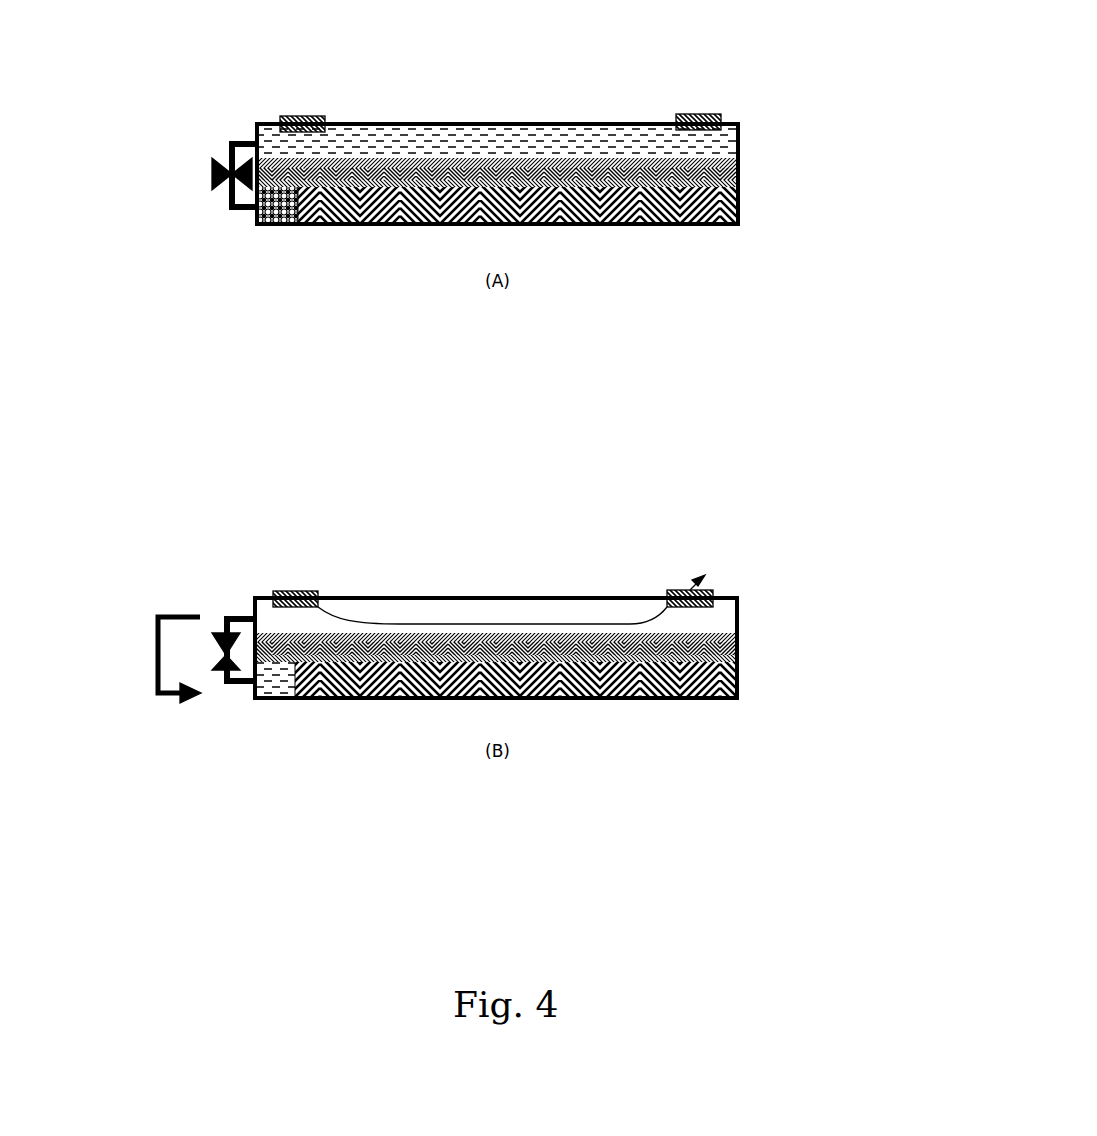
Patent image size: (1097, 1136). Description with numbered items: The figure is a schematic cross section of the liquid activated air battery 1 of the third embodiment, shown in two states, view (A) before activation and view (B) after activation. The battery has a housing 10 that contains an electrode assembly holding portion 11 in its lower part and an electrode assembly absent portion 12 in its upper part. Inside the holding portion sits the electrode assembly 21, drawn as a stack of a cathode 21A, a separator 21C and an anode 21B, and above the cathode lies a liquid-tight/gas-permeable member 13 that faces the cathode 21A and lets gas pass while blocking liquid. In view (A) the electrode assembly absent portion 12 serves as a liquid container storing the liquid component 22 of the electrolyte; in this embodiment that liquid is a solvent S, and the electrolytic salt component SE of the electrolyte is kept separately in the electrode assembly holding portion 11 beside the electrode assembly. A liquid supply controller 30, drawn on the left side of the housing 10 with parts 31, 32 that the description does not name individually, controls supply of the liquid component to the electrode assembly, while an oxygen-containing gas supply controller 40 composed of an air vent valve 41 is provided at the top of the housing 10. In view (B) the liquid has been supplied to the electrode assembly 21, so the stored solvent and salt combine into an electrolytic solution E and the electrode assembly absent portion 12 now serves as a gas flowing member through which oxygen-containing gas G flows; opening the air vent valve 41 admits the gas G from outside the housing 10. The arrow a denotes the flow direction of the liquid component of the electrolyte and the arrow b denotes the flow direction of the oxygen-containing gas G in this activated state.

The liquid activated air battery 1 is at (506, 108).
The housing 10 is at (740, 142).
The electrode assembly holding portion 11 is at (630, 225).
The electrode assembly absent portion 12 is at (556, 345).
The liquid-tight/gas-permeable member 13 is at (740, 162).
The electrode assembly 21 is at (573, 442).
The cathode 21A is at (740, 170).
The anode 21B is at (740, 205).
The separator 21C is at (740, 182).
The liquid component of the electrolyte 22 is at (455, 398).
The solvent S is at (567, 140).
The electrolytic solution E is at (262, 699).
The liquid supply controller 30 is at (178, 407).
The supply pipe 31 is at (233, 144).
The valve 32 is at (213, 173).
The oxygen-containing gas supply controller 40 is at (526, 319).
The air vent valve 41 is at (300, 116).
The electrolytic salt component SE is at (257, 217).
The oxygen-containing gas G is at (582, 610).
The arrow denoting flow direction of oxygen-containing gas b is at (415, 624).
The arrow denoting flow direction of liquid component of the electrolyte a is at (158, 658).